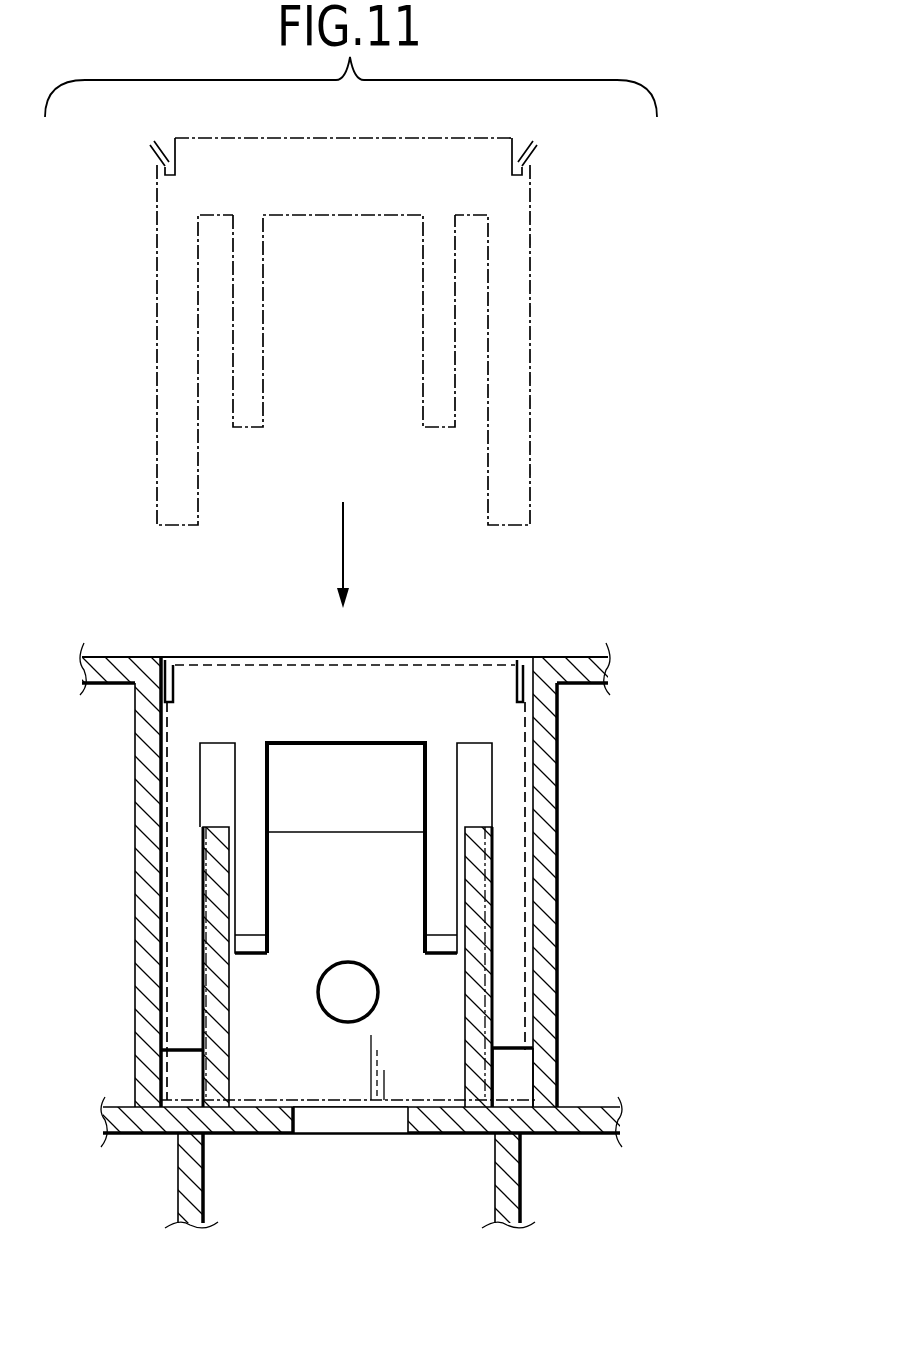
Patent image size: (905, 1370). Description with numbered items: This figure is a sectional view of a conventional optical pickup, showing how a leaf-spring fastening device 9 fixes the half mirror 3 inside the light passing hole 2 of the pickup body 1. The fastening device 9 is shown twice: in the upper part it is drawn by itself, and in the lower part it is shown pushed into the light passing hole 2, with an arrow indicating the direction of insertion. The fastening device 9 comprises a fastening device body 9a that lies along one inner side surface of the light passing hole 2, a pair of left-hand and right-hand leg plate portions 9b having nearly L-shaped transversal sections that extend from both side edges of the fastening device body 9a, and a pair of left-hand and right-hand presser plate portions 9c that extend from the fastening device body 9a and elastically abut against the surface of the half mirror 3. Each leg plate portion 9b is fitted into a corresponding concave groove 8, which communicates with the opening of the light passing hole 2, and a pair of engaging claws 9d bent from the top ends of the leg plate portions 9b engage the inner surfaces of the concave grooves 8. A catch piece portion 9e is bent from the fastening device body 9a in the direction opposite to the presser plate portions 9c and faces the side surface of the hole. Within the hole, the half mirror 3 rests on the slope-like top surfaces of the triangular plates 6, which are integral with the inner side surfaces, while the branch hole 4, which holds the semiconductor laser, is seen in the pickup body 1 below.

The pickup body 1 is at (137, 752).
The light passing hole 2 is at (343, 1074).
The half mirror 3 is at (325, 832).
The branch hole 4 is at (318, 993).
The triangular plates 6 is at (220, 1055).
The concave grooves 8 is at (175, 1080).
The fastening device 9 is at (350, 619).
The fastening device body 9a is at (347, 214).
The leg plate portions 9b is at (168, 361).
The presser plate portions 9c is at (256, 326).
The engaging claws 9d is at (150, 157).
The catch piece portion 9e is at (290, 657).